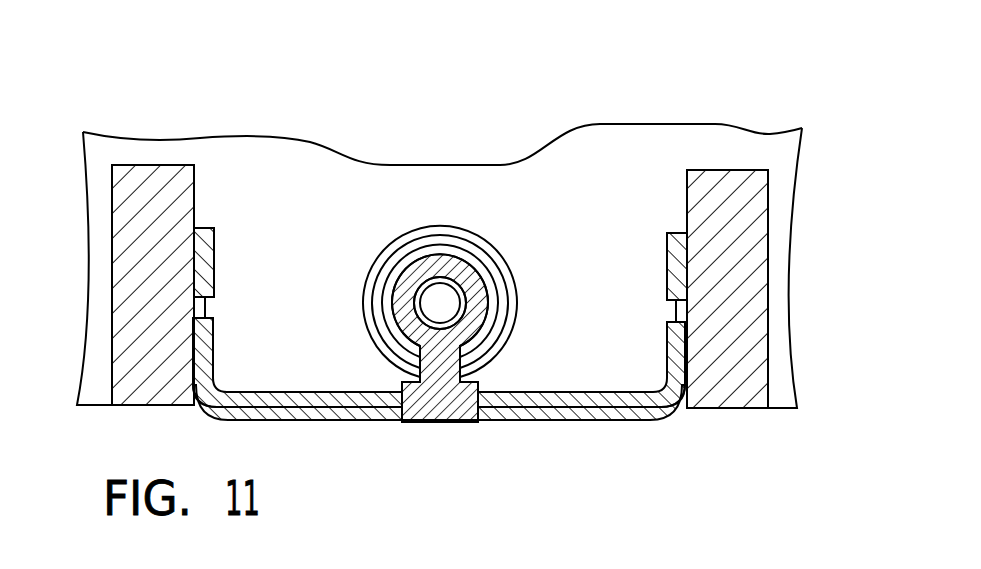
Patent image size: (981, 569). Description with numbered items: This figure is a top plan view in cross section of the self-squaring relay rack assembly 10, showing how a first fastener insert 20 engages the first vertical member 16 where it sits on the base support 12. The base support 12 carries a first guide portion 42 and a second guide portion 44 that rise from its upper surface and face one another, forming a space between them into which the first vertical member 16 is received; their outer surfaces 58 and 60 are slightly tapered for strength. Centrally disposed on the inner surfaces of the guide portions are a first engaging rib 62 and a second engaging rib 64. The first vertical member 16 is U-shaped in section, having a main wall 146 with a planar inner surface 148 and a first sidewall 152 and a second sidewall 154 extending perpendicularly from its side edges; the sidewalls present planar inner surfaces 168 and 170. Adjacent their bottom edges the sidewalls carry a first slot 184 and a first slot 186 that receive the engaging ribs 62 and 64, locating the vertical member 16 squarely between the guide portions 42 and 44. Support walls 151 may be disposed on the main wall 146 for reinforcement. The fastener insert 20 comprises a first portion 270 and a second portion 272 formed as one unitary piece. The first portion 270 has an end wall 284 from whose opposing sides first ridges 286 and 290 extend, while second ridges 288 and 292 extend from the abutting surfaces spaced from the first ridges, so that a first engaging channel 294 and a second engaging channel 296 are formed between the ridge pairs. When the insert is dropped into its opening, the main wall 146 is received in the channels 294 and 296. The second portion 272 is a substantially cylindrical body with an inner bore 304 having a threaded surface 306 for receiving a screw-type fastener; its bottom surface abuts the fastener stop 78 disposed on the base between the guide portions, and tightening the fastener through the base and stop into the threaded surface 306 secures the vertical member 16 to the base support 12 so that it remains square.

The self-squaring relay rack assembly 10 is at (566, 59).
The base support 12 is at (437, 188).
The first vertical member 16 is at (619, 473).
The first fastener insert 20 is at (392, 272).
The first guide portion 42 is at (735, 163).
The second guide portion 44 is at (138, 158).
The outer surface of first guide portion 58 is at (768, 208).
The outer surface of second guide portion 60 is at (112, 212).
The first engaging rib 62 is at (668, 303).
The second engaging rib 64 is at (216, 297).
The fastener stop 78 is at (478, 234).
The main wall 146 is at (618, 386).
The inner surface of main wall 148 is at (236, 393).
The support walls 151 is at (242, 418).
The first sidewall 152 is at (676, 223).
The second sidewall 154 is at (209, 220).
The inner surface of first sidewall 168 is at (220, 236).
The inner surface of second sidewall 170 is at (668, 250).
The first slot of first sidewall 184 is at (688, 316).
The first slot of second sidewall 186 is at (204, 302).
The first portion 270 is at (487, 352).
The second portion 272 is at (413, 268).
The end wall 284 is at (445, 422).
The first ridge 286 is at (480, 422).
The second ridge 288 is at (480, 383).
The first ridge 290 is at (397, 422).
The second ridge 292 is at (385, 380).
The first engaging channel 294 is at (515, 422).
The second engaging channel 296 is at (395, 422).
The inner bore 304 is at (470, 303).
The threaded surface 306 is at (422, 299).